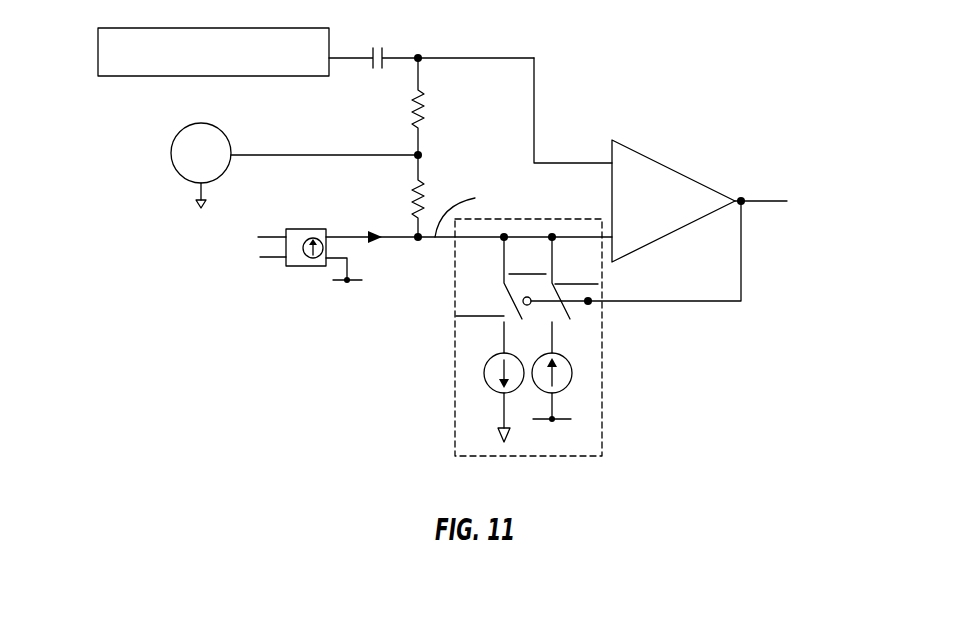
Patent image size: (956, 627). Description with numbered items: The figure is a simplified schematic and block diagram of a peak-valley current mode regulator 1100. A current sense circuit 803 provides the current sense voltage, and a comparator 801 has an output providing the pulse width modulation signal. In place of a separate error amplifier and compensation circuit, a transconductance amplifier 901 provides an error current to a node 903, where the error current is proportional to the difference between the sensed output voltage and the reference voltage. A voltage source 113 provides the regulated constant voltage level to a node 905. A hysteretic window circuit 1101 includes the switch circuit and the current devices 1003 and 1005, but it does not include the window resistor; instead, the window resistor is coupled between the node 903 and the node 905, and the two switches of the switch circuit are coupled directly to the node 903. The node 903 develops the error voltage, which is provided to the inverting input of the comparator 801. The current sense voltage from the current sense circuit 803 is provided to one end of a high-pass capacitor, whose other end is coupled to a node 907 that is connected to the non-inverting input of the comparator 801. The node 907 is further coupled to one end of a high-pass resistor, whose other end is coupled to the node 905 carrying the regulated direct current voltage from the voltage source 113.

The current sense circuit 803 is at (227, 64).
The voltage source 113 is at (217, 166).
The transconductance amplifier 901 is at (309, 229).
The node 903 is at (418, 241).
The node 905 is at (418, 155).
The node 907 is at (534, 82).
The comparator 801 is at (662, 215).
The current device 1003 is at (488, 388).
The current device 1005 is at (565, 358).
The peak-valley current mode regulator 1100 is at (333, 365).
The hysteretic window circuit 1101 is at (534, 337).